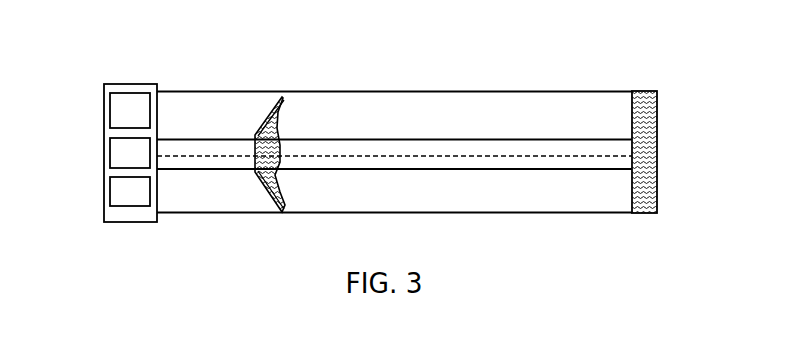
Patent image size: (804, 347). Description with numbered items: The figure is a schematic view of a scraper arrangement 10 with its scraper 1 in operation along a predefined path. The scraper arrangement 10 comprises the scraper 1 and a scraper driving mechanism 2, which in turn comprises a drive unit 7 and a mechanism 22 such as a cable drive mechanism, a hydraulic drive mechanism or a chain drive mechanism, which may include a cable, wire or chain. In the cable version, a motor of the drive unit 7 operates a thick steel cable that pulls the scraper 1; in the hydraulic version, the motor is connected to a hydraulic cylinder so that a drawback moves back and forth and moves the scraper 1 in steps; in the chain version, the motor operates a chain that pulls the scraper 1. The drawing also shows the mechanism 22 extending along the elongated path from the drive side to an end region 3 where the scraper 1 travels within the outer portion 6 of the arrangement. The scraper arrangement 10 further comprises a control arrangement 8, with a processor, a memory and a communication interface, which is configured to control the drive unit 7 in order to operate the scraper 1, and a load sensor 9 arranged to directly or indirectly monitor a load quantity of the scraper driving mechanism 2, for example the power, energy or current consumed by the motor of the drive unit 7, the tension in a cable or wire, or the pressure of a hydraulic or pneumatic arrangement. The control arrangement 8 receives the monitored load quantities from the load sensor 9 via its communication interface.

The scraper arrangement 10 is at (163, 73).
The scraper 1 is at (257, 130).
The scraper driving mechanism 2 is at (427, 155).
The mechanism 22 is at (478, 156).
The outer housing tube 6 is at (553, 147).
The porous end cap 3 is at (648, 108).
The drive unit 7 is at (120, 103).
The control arrangement 8 is at (117, 148).
The load sensor 9 is at (117, 194).